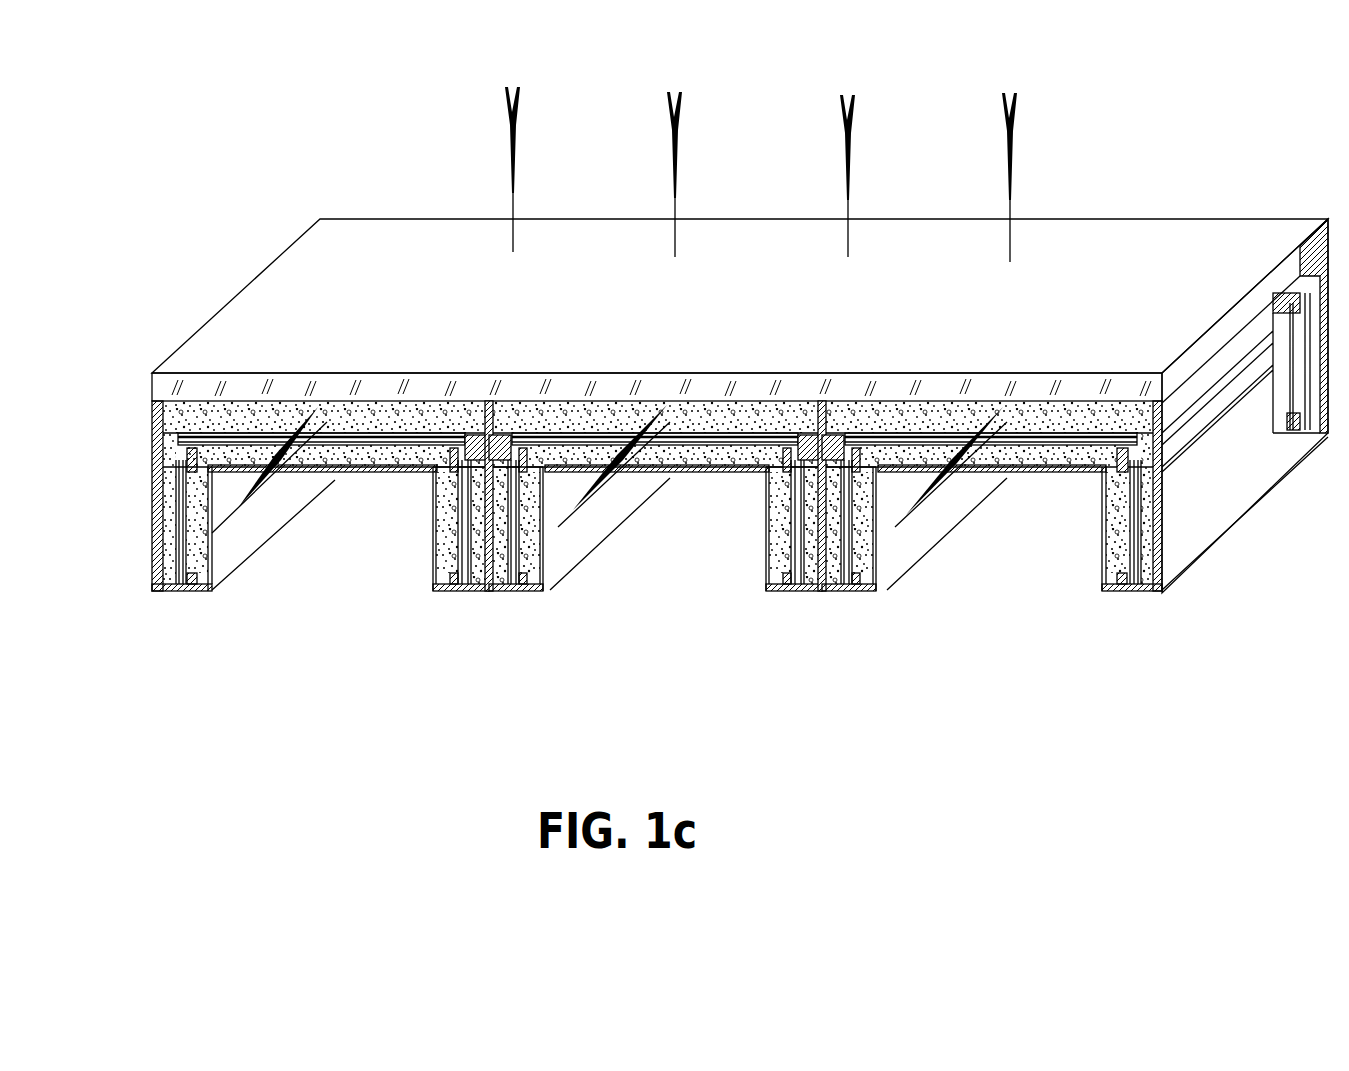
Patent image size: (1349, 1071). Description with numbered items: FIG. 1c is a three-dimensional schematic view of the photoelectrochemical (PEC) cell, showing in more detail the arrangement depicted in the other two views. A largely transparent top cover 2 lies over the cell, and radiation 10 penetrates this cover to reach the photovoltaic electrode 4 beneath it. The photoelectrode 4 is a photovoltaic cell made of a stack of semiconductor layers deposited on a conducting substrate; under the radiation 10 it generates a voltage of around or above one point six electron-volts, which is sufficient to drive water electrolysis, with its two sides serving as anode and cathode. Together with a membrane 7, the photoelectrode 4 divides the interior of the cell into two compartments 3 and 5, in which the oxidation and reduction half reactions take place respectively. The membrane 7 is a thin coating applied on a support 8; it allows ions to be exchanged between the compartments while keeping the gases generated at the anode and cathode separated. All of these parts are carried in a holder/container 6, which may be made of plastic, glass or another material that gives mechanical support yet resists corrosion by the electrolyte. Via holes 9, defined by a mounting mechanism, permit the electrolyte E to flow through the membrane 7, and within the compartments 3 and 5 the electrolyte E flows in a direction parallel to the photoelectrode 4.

The top cover 2 is at (500, 358).
The compartment 3 is at (1055, 418).
The photovoltaic electrode 4 is at (413, 468).
The compartment 5 is at (1073, 457).
The holder/container 6 is at (1158, 492).
The membrane 7 is at (857, 551).
The support 8 is at (838, 517).
The via holes 9 is at (477, 430).
The radiation 10 is at (761, 160).
The electrolyte E is at (237, 512).